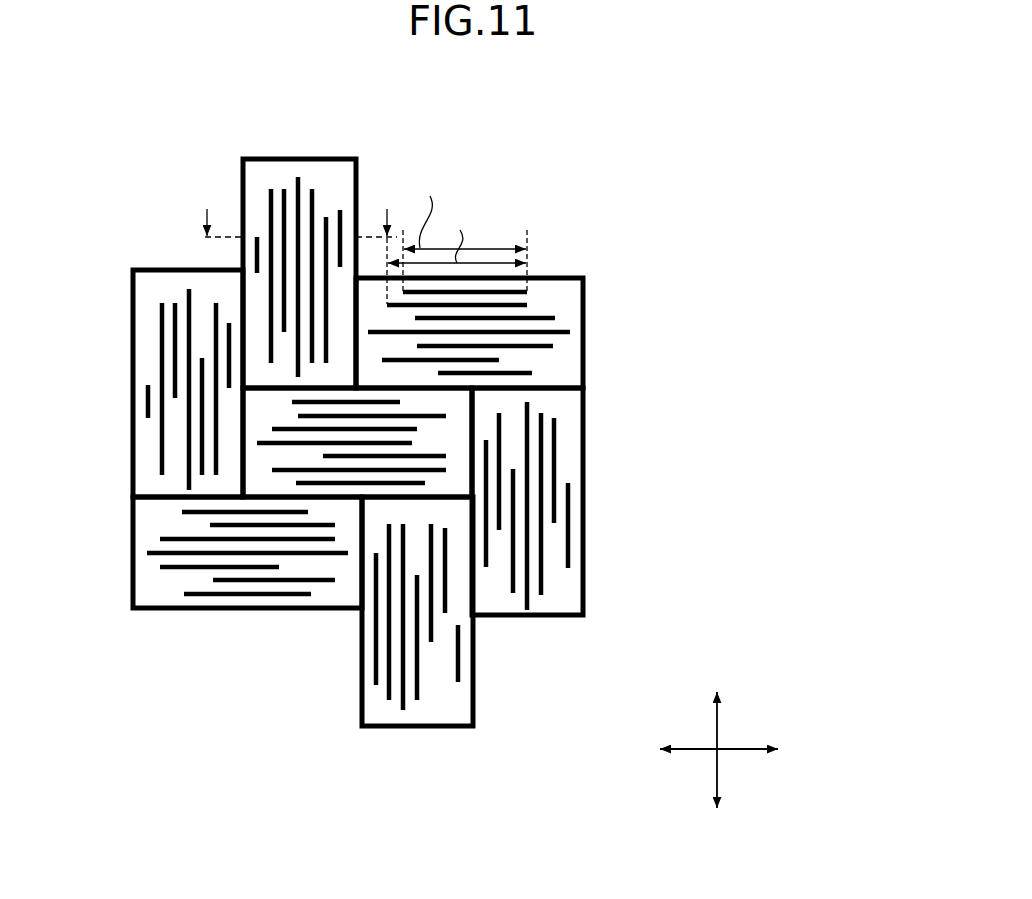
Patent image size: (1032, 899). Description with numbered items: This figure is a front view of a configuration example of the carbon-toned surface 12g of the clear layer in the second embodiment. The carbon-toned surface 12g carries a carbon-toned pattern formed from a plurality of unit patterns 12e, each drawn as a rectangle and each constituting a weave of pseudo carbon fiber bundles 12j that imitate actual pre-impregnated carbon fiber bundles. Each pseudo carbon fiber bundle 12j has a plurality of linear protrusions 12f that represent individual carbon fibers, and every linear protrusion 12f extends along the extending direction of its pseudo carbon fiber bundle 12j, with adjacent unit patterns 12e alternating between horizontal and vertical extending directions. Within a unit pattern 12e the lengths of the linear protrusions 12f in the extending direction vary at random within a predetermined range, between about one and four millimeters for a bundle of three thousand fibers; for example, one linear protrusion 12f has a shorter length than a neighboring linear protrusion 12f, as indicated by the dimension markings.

The unit pattern 12e is at (357, 178).
The linear protrusion 12f is at (326, 217).
The carbon-toned surface 12g is at (498, 136).
The pseudo carbon fiber bundle 12j is at (155, 267).